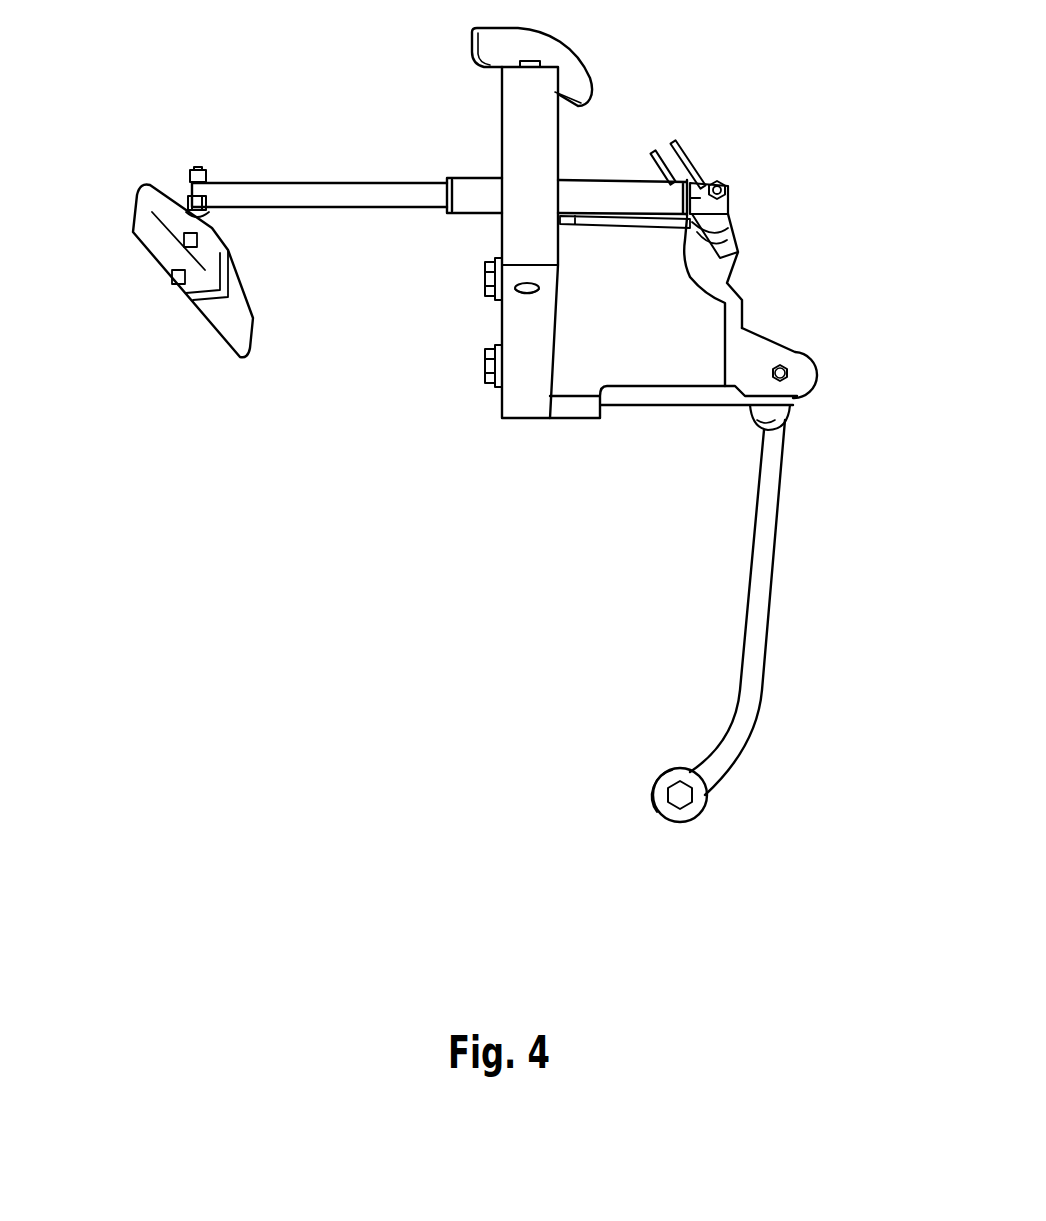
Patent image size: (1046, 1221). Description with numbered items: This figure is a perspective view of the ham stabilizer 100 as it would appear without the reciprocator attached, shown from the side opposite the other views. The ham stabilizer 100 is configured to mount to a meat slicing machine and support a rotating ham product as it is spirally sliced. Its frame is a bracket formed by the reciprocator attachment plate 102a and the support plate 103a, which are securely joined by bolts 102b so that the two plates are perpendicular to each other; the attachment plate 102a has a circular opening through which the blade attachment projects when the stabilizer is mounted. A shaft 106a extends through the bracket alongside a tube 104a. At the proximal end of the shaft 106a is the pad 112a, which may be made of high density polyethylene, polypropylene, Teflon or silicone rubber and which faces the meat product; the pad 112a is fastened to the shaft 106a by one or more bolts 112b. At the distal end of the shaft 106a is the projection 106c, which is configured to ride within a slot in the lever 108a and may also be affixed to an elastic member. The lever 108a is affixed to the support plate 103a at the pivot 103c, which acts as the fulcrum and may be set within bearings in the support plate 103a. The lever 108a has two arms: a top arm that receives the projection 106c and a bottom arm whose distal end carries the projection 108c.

The ham stabilizer 100 is at (254, 590).
The reciprocator attachment plate 102a is at (518, 395).
The bolts 102b is at (487, 368).
The support plate 103a is at (705, 328).
The pivot 103c is at (797, 364).
The tube 104a is at (633, 182).
The shaft 106a is at (288, 183).
The projection 106c is at (722, 183).
The lever 108a is at (757, 548).
The projection 108c is at (656, 788).
The pad 112a is at (150, 250).
The bolts 112b is at (196, 166).